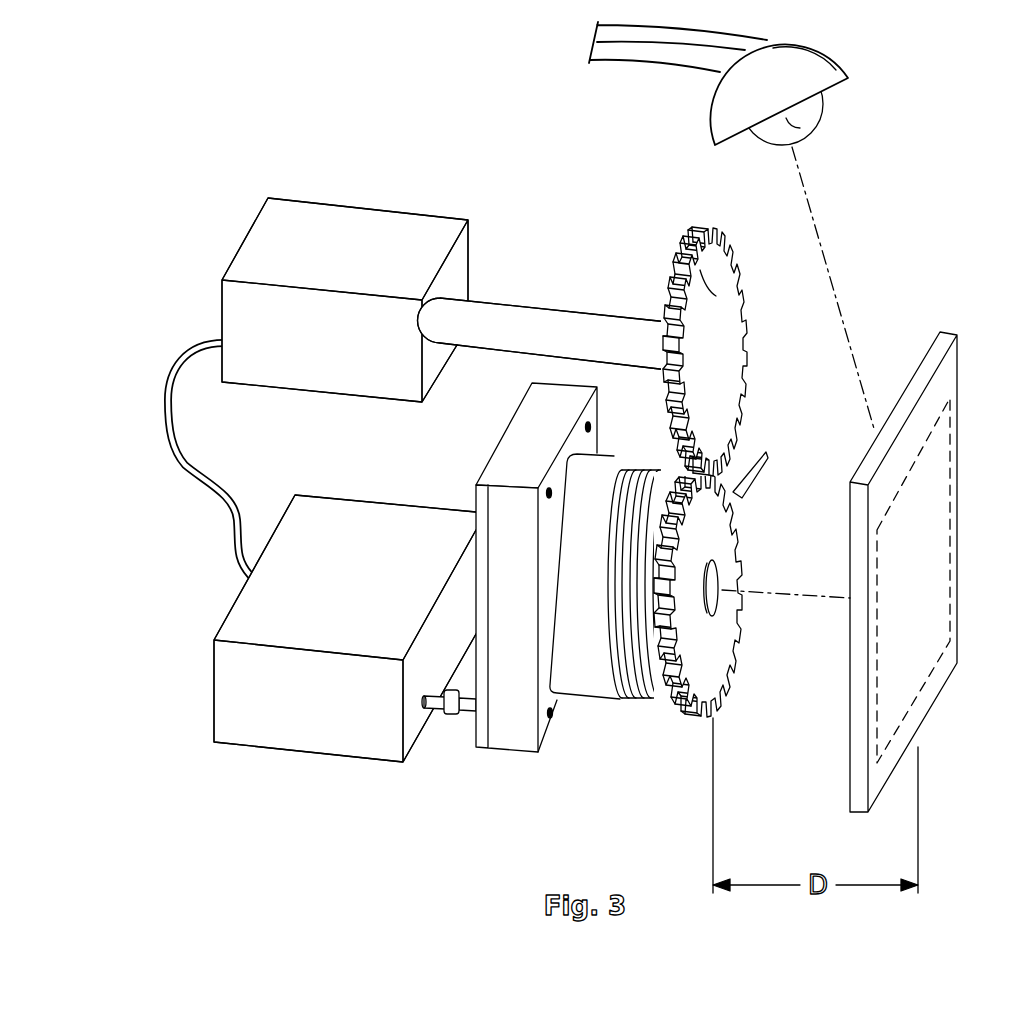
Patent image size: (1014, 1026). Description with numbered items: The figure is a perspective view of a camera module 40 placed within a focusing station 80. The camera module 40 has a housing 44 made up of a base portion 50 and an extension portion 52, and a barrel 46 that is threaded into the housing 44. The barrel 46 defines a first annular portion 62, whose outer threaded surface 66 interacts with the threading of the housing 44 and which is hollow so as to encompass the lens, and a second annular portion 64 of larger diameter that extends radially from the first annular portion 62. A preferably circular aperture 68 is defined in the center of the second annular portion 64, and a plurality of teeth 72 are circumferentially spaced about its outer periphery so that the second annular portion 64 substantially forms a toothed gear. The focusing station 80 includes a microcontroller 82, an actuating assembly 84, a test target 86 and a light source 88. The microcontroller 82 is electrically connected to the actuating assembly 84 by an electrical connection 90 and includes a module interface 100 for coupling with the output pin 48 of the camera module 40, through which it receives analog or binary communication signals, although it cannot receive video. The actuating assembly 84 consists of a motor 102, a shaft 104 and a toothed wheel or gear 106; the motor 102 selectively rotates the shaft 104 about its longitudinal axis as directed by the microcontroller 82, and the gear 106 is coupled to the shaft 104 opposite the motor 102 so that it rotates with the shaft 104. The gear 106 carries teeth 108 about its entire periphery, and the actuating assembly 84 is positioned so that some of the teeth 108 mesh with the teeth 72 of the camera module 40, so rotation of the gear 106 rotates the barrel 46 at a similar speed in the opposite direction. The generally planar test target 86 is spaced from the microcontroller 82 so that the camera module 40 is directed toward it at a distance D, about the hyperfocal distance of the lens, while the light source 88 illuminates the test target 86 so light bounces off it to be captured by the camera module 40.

The camera module 40 is at (731, 616).
The housing 44 is at (539, 588).
The barrel 46 is at (648, 595).
The output pin 48 is at (462, 716).
The base portion 50 is at (518, 738).
The extension portion 52 is at (598, 694).
The first annular portion 62 is at (637, 539).
The second annular portion 64 is at (714, 544).
The outer threaded surface 66 is at (655, 468).
The aperture 68 is at (722, 592).
The teeth 72 is at (767, 455).
The focusing station 80 is at (938, 233).
The microcontroller 82 is at (246, 692).
The actuating assembly 84 is at (309, 280).
The test target 86 is at (925, 563).
The light source 88 is at (800, 128).
The electrical connection 90 is at (186, 463).
The module interface 100 is at (440, 757).
The motor 102 is at (363, 242).
The shaft 104 is at (545, 332).
The gear 106 is at (667, 331).
The teeth 108 is at (690, 276).